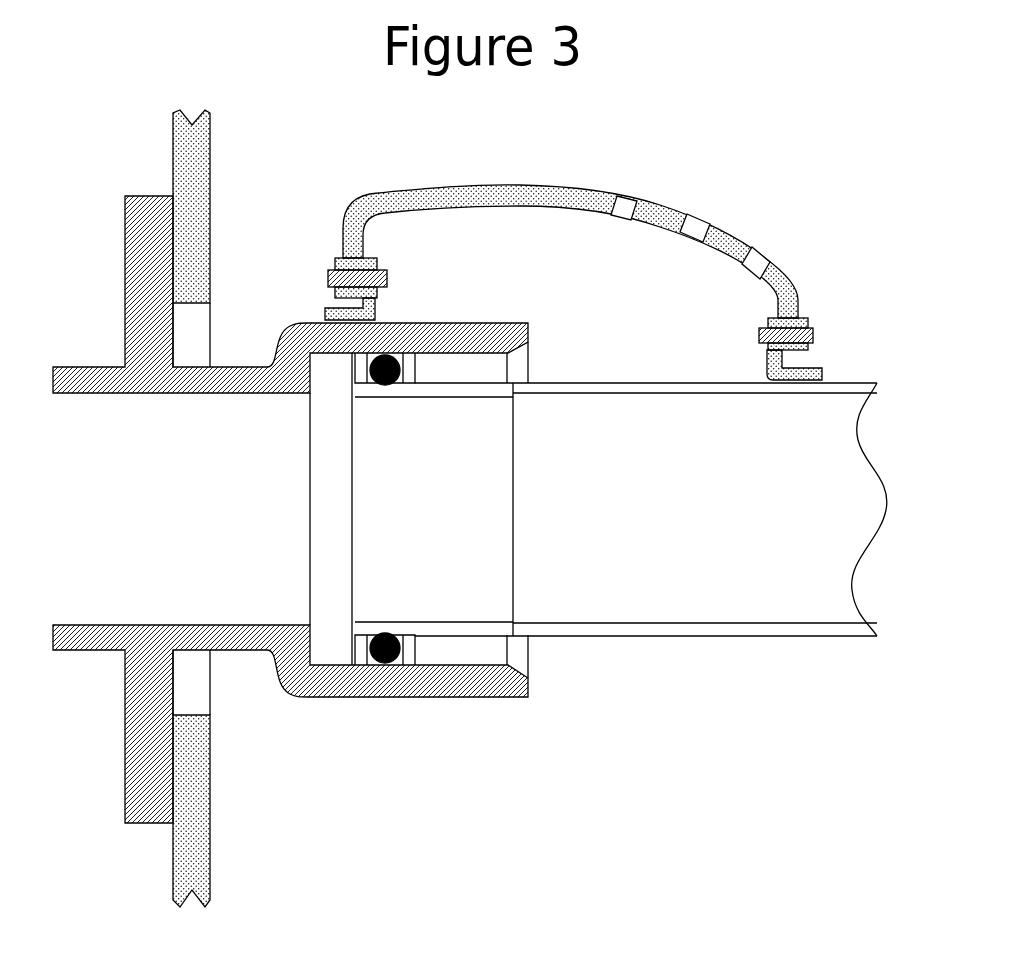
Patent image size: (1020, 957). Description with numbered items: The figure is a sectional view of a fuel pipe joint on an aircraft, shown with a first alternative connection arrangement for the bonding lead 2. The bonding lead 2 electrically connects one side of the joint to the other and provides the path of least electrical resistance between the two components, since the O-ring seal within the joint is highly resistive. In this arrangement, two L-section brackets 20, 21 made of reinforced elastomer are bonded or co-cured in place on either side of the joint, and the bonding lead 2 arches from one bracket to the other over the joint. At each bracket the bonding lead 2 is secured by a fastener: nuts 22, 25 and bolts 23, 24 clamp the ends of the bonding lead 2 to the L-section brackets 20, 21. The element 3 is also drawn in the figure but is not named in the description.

The bonding lead 2 is at (521, 190).
The pipe 3 is at (470, 622).
The L-section bracket 20 is at (377, 305).
The L-section bracket 21 is at (773, 363).
The nut 22 is at (338, 268).
The bolt 23 is at (328, 281).
The bolt 24 is at (759, 332).
The nut 25 is at (805, 323).